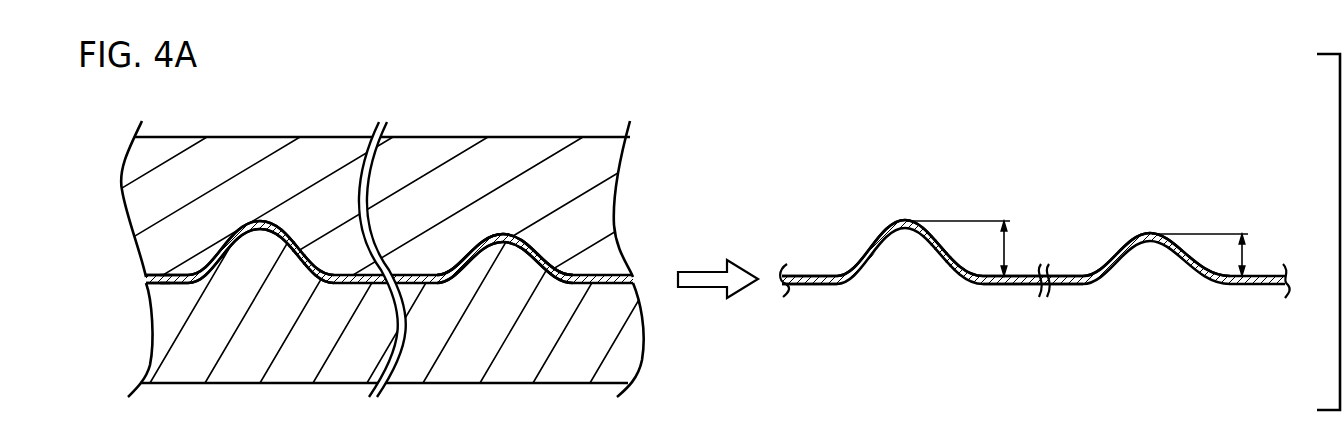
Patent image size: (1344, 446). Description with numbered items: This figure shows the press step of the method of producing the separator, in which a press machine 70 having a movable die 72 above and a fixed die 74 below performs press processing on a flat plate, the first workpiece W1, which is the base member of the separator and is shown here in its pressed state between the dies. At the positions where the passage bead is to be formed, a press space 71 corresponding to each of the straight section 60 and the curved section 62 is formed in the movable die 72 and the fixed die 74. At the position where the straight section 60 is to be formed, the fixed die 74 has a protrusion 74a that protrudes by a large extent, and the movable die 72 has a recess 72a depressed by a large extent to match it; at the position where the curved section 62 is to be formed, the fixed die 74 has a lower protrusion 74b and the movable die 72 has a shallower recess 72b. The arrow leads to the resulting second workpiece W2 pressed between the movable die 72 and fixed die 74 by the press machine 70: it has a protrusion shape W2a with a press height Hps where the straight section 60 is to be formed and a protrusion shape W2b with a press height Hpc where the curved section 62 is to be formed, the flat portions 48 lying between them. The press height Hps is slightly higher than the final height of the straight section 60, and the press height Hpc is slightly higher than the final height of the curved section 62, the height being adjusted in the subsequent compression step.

The press machine 70 is at (402, 74).
The movable die 72 is at (228, 145).
The fixed die 74 is at (252, 370).
The recess 72a is at (243, 236).
The recess 72b is at (498, 246).
The protrusion 74a is at (258, 226).
The protrusion 74b is at (508, 235).
The straight section 60 is at (301, 231).
The curved section 62 is at (553, 239).
The press space 71 is at (141, 266).
The first workpiece W1 is at (181, 273).
The second workpiece W2 is at (832, 266).
The protrusion shape W2a is at (907, 220).
The protrusion shape W2b is at (1153, 233).
The flat portion of formed sheet 48 is at (807, 285).
The press height Hps is at (977, 248).
The press height Hpc is at (1217, 255).